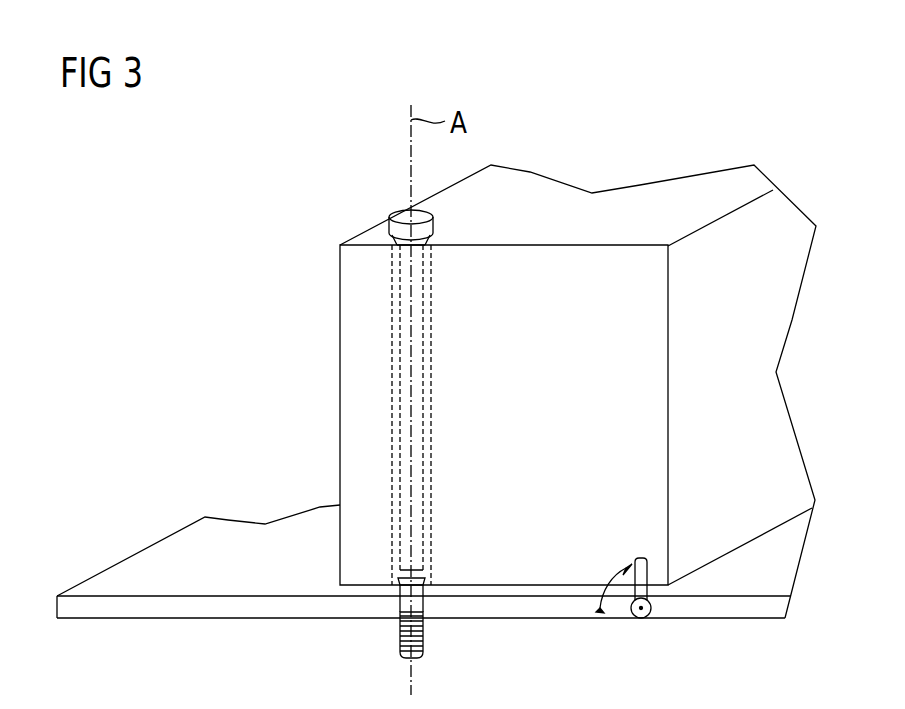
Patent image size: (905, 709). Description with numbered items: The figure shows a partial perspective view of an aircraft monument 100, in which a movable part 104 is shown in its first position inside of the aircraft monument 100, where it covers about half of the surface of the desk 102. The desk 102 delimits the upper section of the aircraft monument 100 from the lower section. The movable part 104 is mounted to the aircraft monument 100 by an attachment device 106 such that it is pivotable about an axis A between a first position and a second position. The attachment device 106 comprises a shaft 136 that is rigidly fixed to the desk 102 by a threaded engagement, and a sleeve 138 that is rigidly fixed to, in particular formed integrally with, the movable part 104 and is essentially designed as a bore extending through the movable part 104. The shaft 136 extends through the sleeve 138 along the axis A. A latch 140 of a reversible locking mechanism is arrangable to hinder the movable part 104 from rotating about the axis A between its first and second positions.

The aircraft monument 100 is at (553, 122).
The desk 102 is at (211, 603).
The movable part 104 is at (625, 200).
The attachment device 106 is at (394, 434).
The shaft 136 is at (425, 480).
The sleeve 138 is at (432, 417).
The latch 140 is at (642, 557).